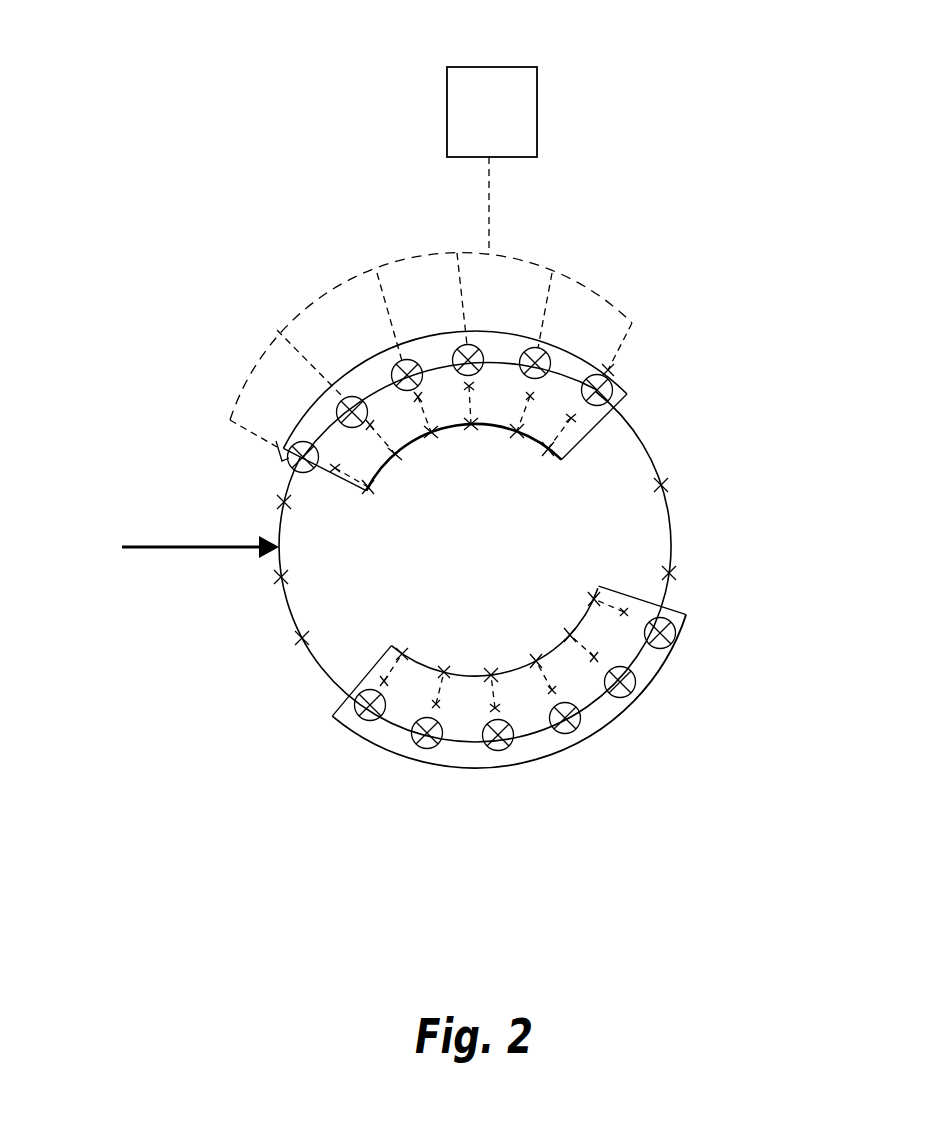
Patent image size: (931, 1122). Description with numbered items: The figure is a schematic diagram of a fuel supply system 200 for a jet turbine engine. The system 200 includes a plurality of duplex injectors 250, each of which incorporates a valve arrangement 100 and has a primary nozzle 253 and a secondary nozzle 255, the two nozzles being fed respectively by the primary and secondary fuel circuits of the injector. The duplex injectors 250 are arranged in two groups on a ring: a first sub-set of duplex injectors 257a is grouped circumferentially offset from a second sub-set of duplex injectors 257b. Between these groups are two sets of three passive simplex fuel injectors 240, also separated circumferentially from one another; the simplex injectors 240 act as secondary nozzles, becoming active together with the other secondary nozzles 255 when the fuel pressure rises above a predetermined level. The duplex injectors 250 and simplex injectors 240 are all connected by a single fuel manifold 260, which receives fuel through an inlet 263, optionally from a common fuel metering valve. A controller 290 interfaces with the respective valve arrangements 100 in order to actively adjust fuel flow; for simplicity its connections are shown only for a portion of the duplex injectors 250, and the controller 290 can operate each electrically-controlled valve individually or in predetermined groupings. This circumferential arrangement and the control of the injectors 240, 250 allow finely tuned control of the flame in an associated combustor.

The fuel supply system 200 is at (175, 190).
The controller 290 is at (513, 66).
The duplex injector 250 is at (550, 344).
The first sub-set of duplex injectors 257a is at (279, 457).
The second sub-set of duplex injectors 257b is at (383, 747).
The valve arrangement 100 is at (353, 397).
The primary nozzle 253 is at (373, 492).
The simplex fuel injector 240 is at (679, 475).
The fuel manifold 260 is at (327, 667).
The secondary nozzle 255 is at (520, 728).
The inlet 263 is at (178, 546).